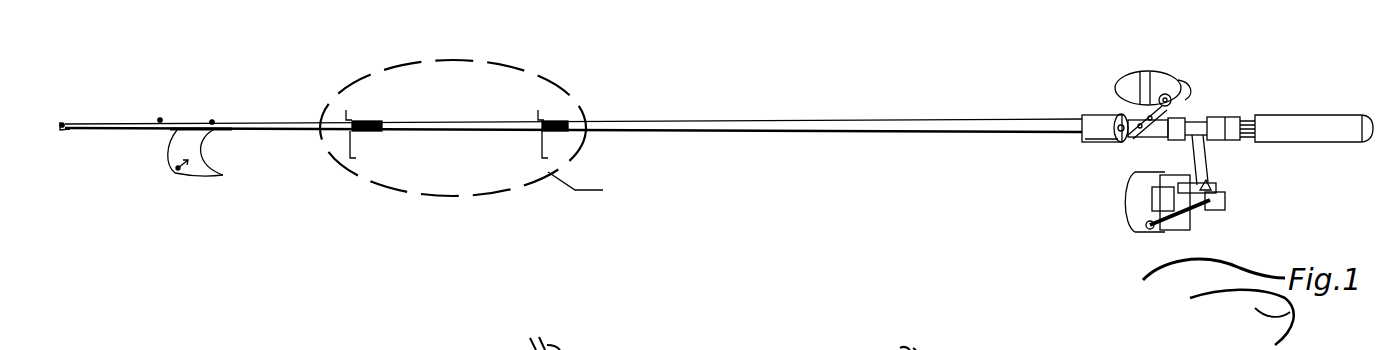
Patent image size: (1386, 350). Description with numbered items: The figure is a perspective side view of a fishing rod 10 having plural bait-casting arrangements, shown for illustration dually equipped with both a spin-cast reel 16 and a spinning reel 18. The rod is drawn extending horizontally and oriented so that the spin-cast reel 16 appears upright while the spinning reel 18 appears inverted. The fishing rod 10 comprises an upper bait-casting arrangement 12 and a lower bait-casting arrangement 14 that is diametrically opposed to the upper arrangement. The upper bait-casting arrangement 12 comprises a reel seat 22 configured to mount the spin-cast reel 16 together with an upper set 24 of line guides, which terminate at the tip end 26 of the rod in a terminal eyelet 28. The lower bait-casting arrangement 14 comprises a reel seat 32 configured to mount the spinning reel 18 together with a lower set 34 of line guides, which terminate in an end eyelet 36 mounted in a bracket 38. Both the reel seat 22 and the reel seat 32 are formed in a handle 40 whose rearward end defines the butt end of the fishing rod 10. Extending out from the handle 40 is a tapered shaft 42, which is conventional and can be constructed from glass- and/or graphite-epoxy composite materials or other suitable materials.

The fishing rod 10 is at (710, 130).
The upper bait-casting arrangement 12 is at (552, 140).
The lower bait-casting arrangement 14 is at (1036, 140).
The spin-cast reel 16 is at (1160, 82).
The spinning reel 18 is at (1206, 178).
The reel seat 22 is at (1160, 138).
The upper set of line guides 24 is at (535, 113).
The tip end 26 is at (66, 124).
The terminal eyelet 28 is at (58, 124).
The reel seat 32 is at (1205, 113).
The lower set of line guides 34 is at (540, 152).
The end eyelet 36 is at (178, 168).
The bracket 38 is at (204, 152).
The handle 40 is at (1333, 132).
The tapered shaft 42 is at (648, 121).